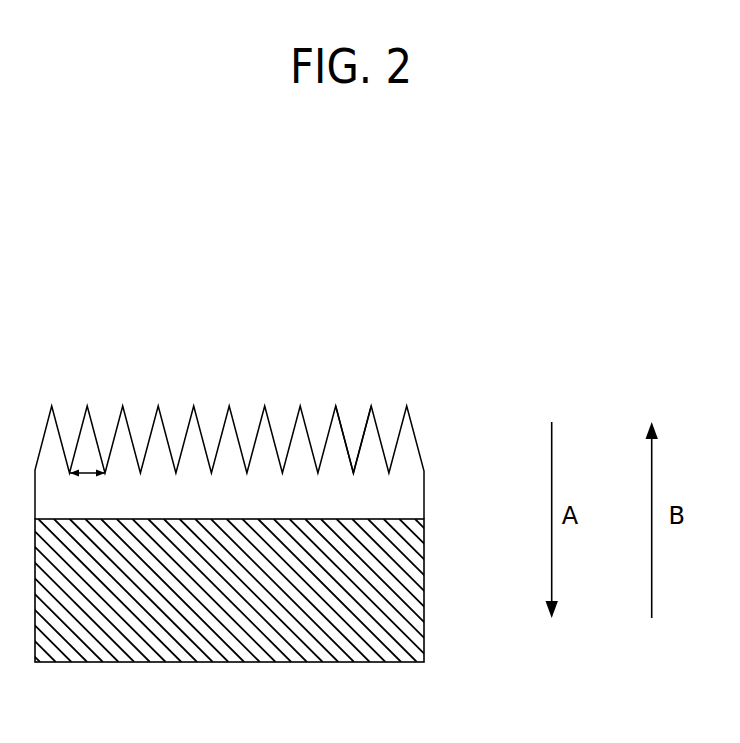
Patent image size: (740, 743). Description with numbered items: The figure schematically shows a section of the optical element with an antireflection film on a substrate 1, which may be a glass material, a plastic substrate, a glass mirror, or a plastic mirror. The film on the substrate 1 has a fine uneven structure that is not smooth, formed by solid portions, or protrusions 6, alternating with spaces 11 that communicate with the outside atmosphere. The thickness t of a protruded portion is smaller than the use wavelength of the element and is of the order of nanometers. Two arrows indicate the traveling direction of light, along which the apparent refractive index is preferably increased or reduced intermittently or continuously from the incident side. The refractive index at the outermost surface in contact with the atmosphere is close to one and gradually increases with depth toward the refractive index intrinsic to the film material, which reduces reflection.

The substrate 1 is at (410, 572).
The solid portions (protrusions) 6 is at (236, 418).
The spaces 11 is at (353, 418).
The thickness of a protruded portion t is at (90, 475).